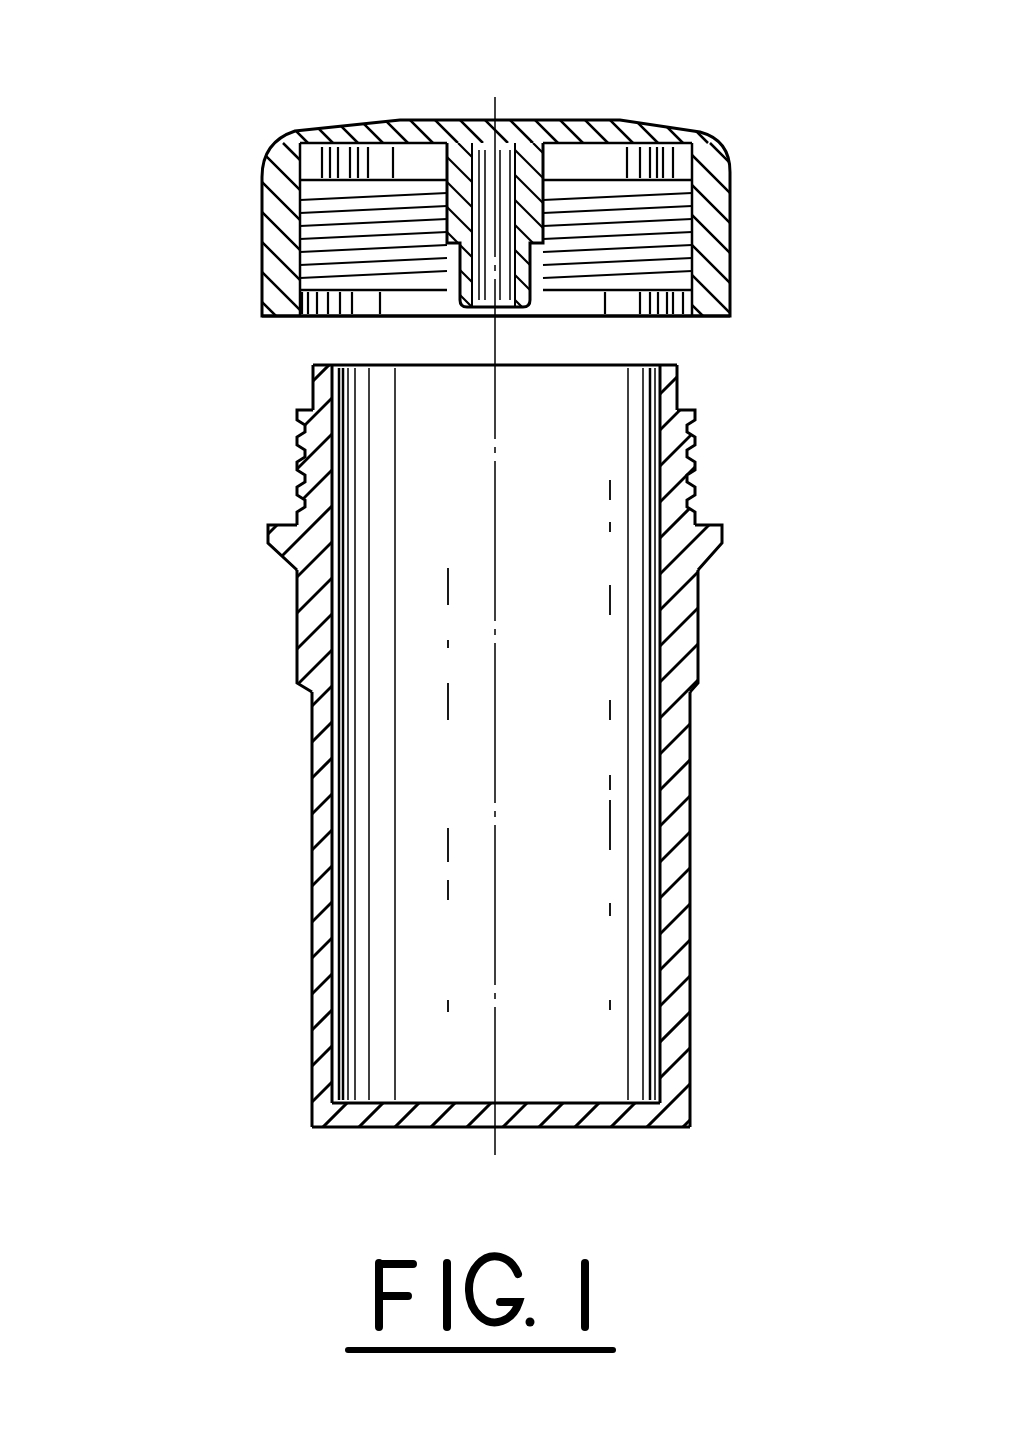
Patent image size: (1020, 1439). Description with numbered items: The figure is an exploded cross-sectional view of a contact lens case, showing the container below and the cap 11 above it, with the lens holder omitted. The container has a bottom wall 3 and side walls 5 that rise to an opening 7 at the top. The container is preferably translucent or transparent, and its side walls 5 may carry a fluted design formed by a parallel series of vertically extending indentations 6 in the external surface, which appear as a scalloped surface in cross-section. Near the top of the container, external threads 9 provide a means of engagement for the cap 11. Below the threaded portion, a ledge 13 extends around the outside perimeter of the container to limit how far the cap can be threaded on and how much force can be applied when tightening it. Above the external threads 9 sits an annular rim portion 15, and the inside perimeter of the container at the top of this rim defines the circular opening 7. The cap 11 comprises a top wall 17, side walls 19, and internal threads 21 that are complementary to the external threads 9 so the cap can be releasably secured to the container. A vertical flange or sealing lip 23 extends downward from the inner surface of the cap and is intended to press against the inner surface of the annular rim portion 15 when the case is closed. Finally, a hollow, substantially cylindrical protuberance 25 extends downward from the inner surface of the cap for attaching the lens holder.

The bottom wall 3 is at (417, 1127).
The side walls 5 is at (297, 655).
The vertically extending indentations 6 is at (312, 797).
The opening 7 is at (366, 356).
The external threads 9 is at (300, 462).
The cap 11 is at (212, 251).
The ledge 13 is at (293, 555).
The annular rim portion 15 is at (333, 396).
The top wall 17 is at (463, 122).
The side walls 19 is at (720, 143).
The internal threads 21 is at (687, 260).
The sealing lip 23 is at (663, 157).
The hollow substantially cylindrical protuberance 25 is at (440, 206).